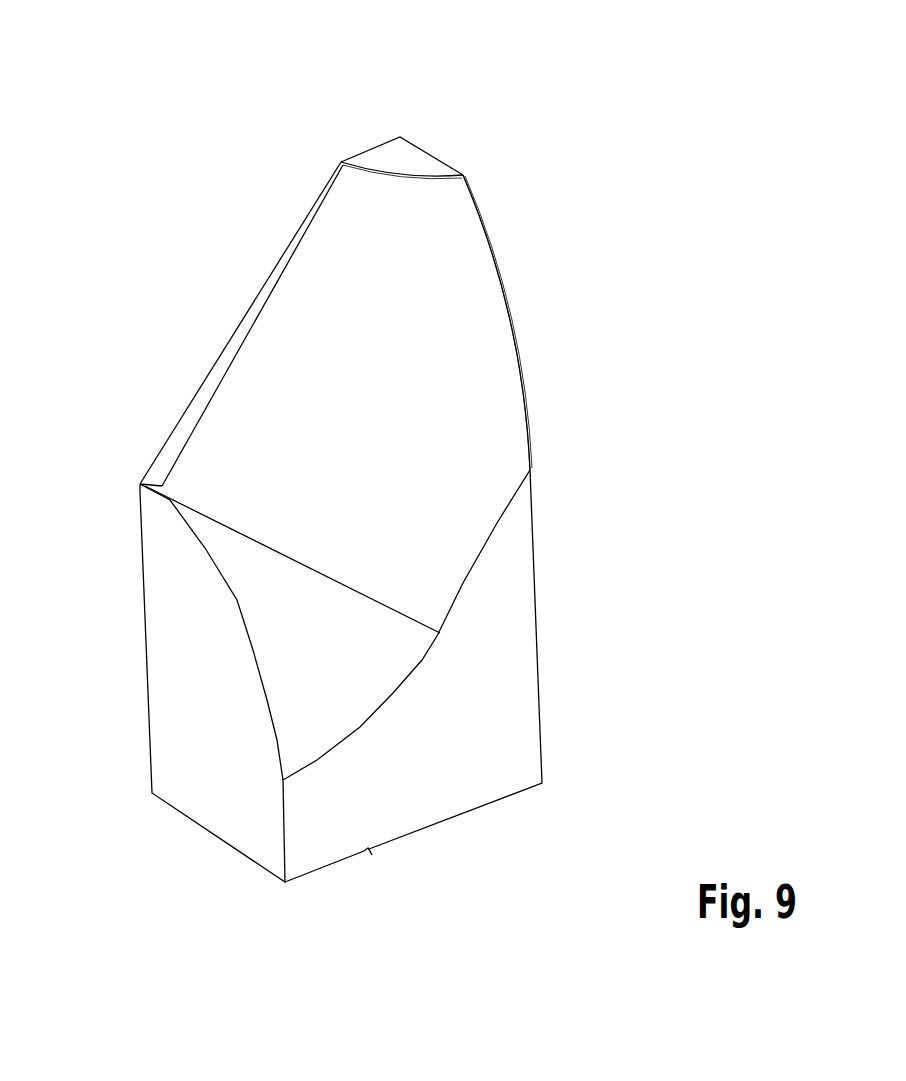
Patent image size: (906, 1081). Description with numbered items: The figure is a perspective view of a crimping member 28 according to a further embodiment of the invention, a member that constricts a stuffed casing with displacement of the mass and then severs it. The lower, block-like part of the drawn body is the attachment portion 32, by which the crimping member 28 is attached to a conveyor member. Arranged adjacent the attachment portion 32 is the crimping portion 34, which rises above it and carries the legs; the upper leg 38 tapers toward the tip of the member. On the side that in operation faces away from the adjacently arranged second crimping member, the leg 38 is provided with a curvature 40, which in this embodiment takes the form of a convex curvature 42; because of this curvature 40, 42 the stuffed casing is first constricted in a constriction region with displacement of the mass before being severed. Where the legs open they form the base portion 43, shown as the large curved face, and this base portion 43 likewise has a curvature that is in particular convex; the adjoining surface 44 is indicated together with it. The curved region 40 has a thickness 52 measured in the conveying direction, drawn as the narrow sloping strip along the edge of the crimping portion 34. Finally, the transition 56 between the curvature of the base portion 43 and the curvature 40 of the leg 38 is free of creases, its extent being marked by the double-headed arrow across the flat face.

The crimping member 28 is at (86, 112).
The attachment portion 32 is at (513, 760).
The crimping portion 34 is at (596, 236).
The leg 38 is at (442, 242).
The curvature 40 is at (598, 341).
The convex curvature 42 is at (485, 420).
The base portion 43 is at (400, 625).
The concave chip surface 44 is at (373, 645).
The thickness 52 is at (295, 356).
The transition 56 is at (178, 457).